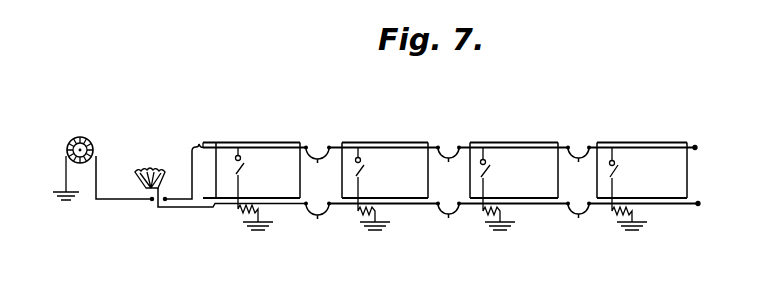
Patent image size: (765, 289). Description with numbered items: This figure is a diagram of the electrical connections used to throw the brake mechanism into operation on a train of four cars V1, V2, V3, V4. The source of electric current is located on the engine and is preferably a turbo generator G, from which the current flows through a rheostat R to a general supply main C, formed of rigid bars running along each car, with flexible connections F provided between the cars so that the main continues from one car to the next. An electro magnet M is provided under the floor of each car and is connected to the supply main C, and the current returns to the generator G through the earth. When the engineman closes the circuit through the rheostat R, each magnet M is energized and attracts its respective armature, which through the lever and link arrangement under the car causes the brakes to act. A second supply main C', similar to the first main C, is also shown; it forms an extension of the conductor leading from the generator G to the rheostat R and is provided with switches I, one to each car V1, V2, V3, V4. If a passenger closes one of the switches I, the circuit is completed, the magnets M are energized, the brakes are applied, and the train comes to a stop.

The turbo generator G is at (80, 140).
The rheostat R is at (220, 179).
The second supply main C' is at (451, 157).
The general supply main C is at (430, 237).
The flexible connection F is at (447, 190).
The switch I is at (419, 173).
The first car V1 is at (250, 171).
The second car V2 is at (370, 172).
The third car V3 is at (495, 172).
The fourth car V4 is at (626, 172).
The electro magnet M is at (434, 217).